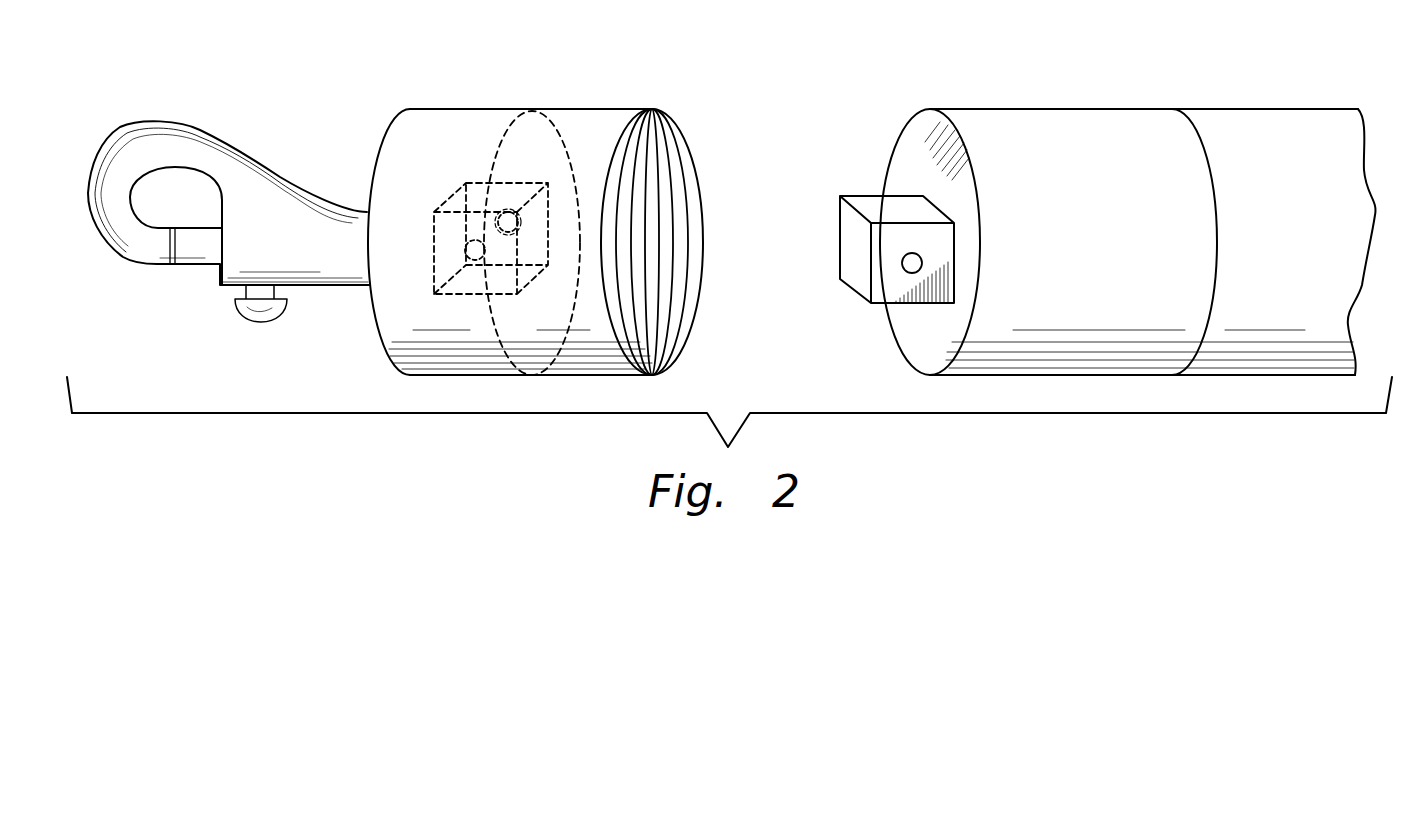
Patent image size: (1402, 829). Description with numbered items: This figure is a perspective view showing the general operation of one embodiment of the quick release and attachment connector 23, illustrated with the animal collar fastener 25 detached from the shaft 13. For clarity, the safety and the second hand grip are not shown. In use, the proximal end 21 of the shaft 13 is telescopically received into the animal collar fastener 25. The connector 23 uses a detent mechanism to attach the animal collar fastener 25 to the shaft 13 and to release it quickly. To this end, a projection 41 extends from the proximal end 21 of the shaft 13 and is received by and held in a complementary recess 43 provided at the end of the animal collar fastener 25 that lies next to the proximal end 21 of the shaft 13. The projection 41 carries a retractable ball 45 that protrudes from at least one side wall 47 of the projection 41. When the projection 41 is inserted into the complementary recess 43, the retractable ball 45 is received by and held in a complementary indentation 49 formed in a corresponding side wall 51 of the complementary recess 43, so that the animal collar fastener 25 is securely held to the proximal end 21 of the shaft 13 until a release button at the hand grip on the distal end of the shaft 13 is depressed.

The shaft 13 is at (1273, 140).
The proximal end 21 is at (924, 140).
The quick release and attachment connector 23 is at (1076, 202).
The animal collar fastener 25 is at (360, 84).
The projection 41 is at (850, 242).
The complementary recess 43 is at (565, 265).
The retractable ball 45 is at (912, 272).
The side wall 47 is at (887, 242).
The complementary indentation 49 is at (508, 222).
The side wall 51 is at (533, 226).